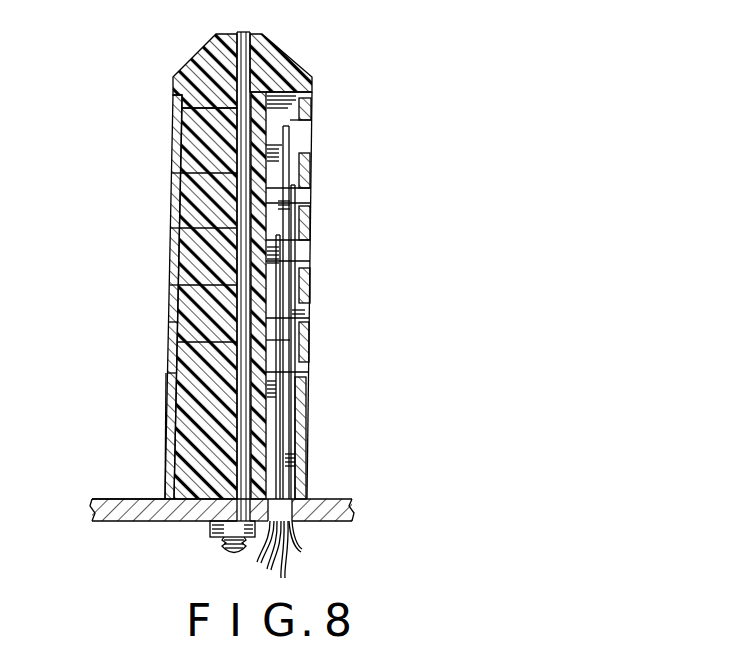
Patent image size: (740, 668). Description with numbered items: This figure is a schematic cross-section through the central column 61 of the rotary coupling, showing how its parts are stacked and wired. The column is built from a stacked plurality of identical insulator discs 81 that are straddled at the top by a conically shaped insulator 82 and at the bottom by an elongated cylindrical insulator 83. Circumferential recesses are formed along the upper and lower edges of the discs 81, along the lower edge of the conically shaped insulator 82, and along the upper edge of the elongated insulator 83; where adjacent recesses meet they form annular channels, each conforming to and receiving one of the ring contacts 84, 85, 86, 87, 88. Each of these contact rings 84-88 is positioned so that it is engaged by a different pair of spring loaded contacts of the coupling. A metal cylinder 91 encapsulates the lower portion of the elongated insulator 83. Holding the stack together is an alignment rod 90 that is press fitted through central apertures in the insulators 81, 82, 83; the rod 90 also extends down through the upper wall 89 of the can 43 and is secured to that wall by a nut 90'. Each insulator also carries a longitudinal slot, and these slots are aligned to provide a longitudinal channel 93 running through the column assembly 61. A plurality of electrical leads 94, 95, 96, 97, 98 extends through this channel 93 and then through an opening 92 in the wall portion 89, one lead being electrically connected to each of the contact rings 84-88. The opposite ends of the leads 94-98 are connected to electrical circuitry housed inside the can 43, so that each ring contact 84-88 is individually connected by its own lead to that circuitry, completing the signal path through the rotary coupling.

The can 43 is at (115, 497).
The central column 61 is at (311, 97).
The insulator discs 81 is at (174, 145).
The conically shaped insulator 82 is at (173, 82).
The elongated cylindrical insulator 83 is at (171, 373).
The ring contact 84 is at (311, 108).
The ring contact 85 is at (309, 173).
The ring contact 86 is at (309, 222).
The ring contact 87 is at (309, 284).
The ring contact 88 is at (309, 342).
The upper wall 89 is at (350, 500).
The alignment rod 90 is at (290, 261).
The nut 90' is at (192, 540).
The metal cylinder 91 is at (163, 432).
The opening 92 is at (292, 524).
The longitudinal channel 93 is at (309, 452).
The electrical lead 94 is at (310, 145).
The electrical lead 95 is at (309, 202).
The electrical lead 96 is at (309, 260).
The electrical lead 97 is at (309, 318).
The electrical lead 98 is at (309, 380).